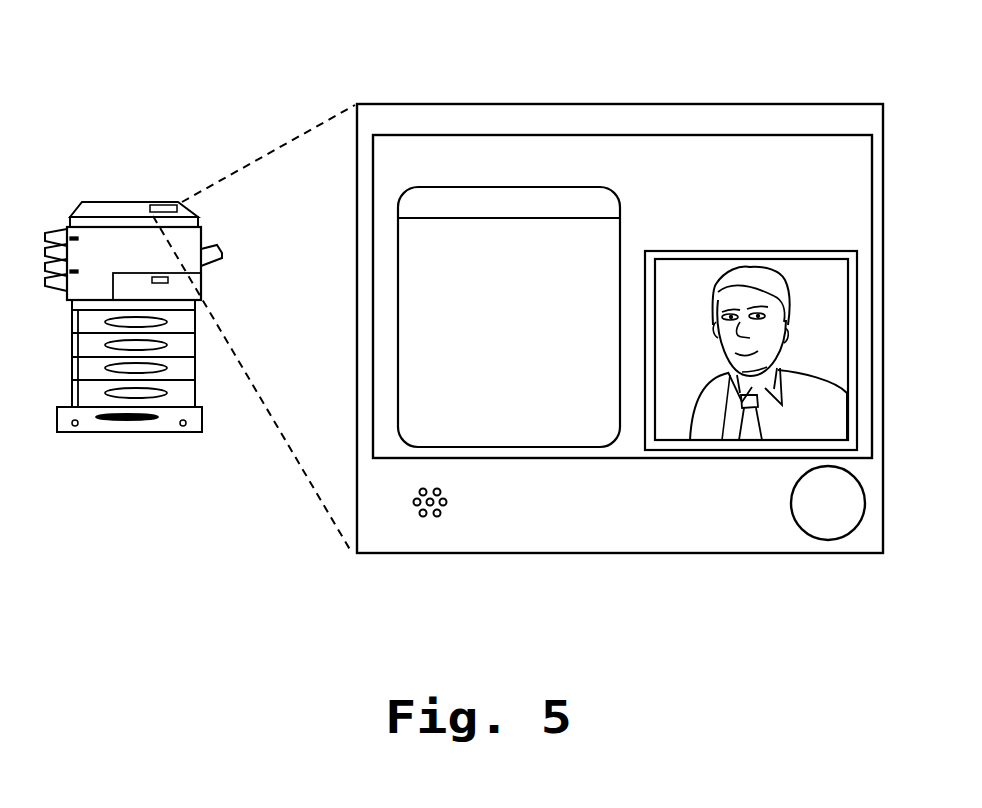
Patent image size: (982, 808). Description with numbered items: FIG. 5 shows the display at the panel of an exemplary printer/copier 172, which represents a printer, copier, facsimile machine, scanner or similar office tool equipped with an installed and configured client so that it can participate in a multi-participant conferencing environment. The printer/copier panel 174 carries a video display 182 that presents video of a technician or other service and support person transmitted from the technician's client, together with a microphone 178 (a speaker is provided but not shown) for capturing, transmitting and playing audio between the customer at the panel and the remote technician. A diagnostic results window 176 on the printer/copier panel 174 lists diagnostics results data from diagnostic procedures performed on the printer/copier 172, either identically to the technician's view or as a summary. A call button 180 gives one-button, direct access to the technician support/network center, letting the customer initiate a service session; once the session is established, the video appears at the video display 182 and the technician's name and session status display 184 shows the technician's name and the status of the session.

The printer/copier 172 is at (97, 208).
The printer/copier panel 174 is at (758, 112).
The diagnostic results window 176 is at (405, 380).
The microphone 178 is at (438, 514).
The call button 180 is at (832, 527).
The video display 182 is at (817, 343).
The technician's name and session status display 184 is at (867, 227).